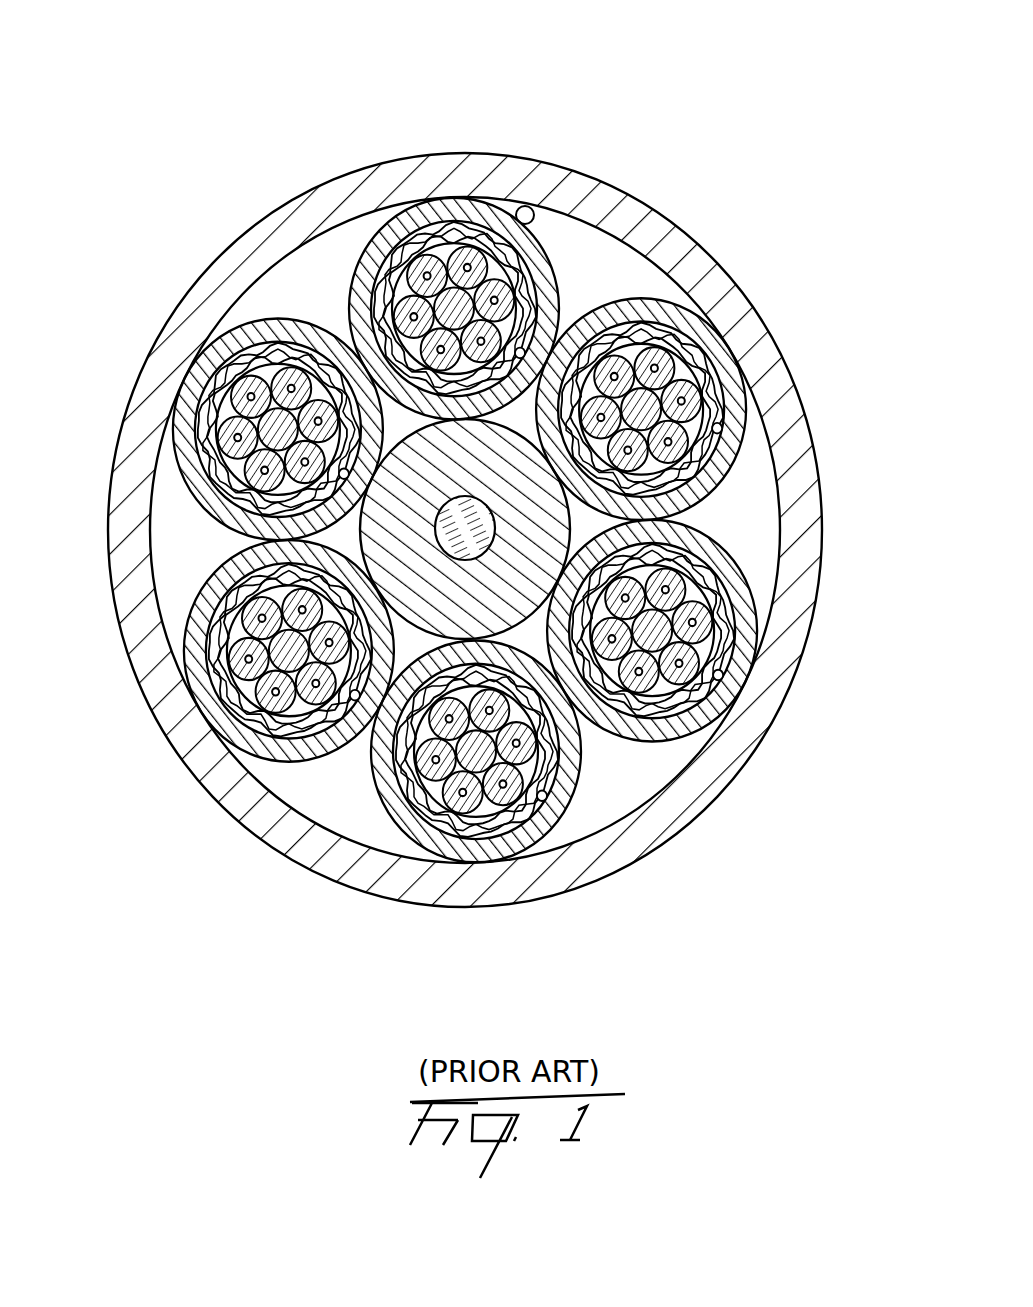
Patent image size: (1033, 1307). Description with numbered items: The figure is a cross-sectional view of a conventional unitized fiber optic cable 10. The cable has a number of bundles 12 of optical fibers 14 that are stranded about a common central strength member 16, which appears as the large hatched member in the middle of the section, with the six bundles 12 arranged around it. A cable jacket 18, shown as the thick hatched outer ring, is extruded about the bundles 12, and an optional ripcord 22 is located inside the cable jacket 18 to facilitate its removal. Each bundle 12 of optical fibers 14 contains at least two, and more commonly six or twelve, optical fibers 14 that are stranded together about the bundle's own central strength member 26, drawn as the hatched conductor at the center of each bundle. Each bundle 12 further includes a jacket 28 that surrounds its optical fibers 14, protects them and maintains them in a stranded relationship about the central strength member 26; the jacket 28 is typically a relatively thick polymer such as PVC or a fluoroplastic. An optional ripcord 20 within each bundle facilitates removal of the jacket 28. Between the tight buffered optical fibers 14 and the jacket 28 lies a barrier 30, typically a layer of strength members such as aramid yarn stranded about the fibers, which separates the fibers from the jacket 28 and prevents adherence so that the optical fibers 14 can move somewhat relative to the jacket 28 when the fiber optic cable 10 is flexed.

The unitized fiber optic cable 10 is at (463, 457).
The bundle of optical fibers 12 is at (534, 465).
The optical fiber 14 is at (465, 529).
The central strength member 16 is at (509, 587).
The cable jacket 18 is at (122, 467).
The ripcord 20 is at (531, 574).
The ripcord 22 is at (526, 206).
The central strength member 26 is at (465, 529).
The jacket 28 is at (465, 530).
The barrier 30 is at (466, 529).